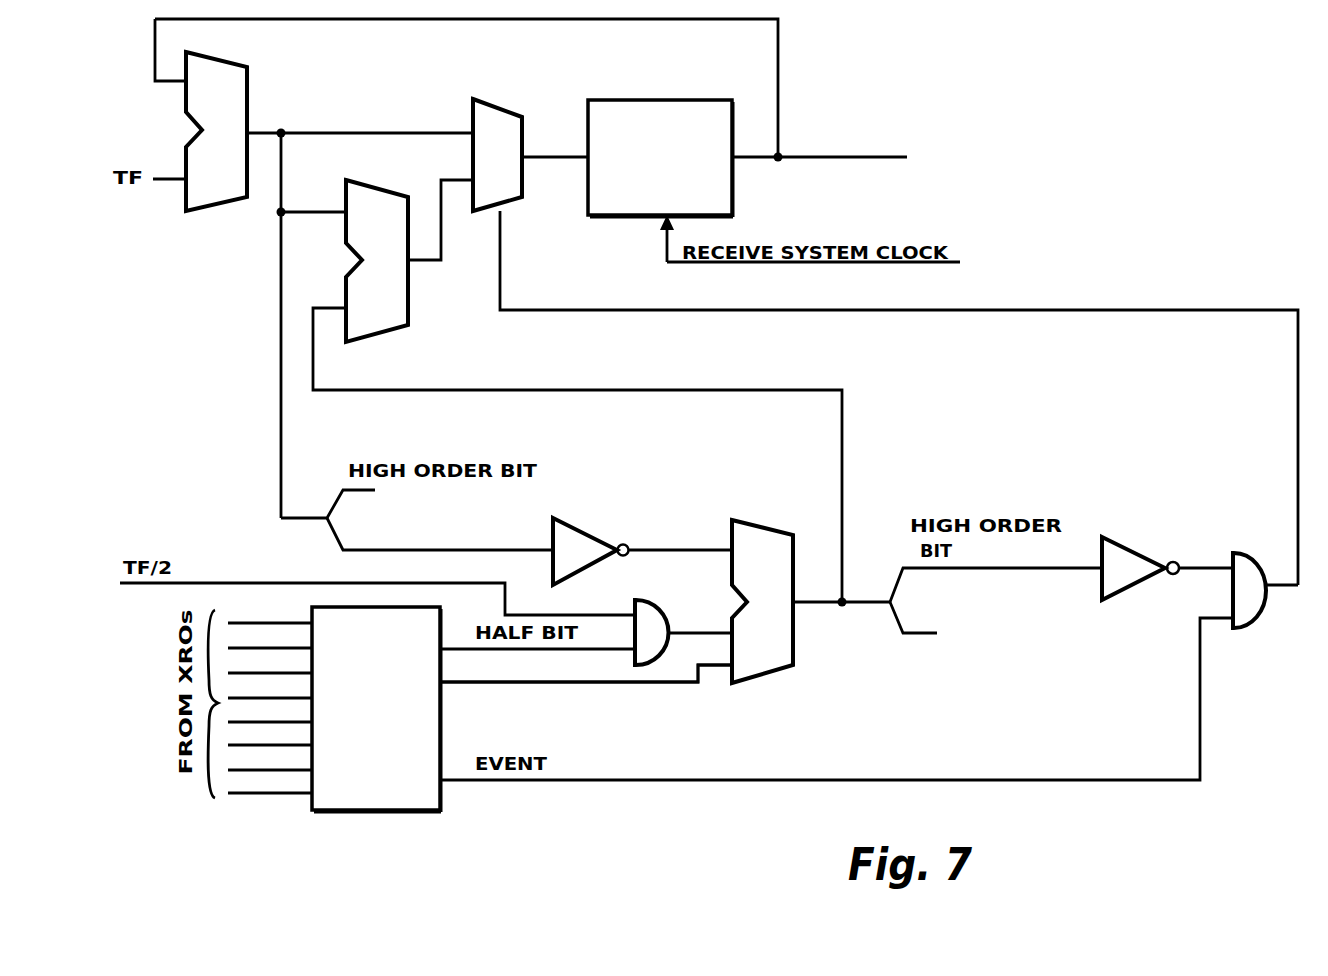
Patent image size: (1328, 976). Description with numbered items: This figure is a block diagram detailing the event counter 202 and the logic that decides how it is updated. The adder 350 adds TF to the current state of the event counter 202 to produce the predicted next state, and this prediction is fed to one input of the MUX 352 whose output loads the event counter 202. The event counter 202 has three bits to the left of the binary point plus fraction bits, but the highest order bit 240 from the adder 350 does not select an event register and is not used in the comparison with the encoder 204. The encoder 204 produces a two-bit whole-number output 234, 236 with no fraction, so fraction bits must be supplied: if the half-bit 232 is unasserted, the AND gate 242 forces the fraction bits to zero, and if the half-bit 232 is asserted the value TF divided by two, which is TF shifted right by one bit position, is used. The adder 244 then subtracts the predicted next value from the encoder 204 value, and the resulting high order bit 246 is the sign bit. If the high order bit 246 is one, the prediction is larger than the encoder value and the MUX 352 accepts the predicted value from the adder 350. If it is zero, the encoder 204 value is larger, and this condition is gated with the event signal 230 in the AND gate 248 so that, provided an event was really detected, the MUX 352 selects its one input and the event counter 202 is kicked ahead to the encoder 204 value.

The adder 350 is at (247, 95).
The MUX 352 is at (500, 103).
The event counter 202 is at (635, 100).
The high order bit 240 is at (467, 505).
The AND gate 242 is at (648, 606).
The adder 244 is at (747, 523).
The high order bit 246 is at (960, 550).
The AND gate 248 is at (1247, 628).
The half-bit 232 is at (527, 650).
The encoder output 234 is at (560, 682).
The encoder output 236 is at (586, 687).
The event signal 230 is at (568, 780).
The encoder 204 is at (376, 727).